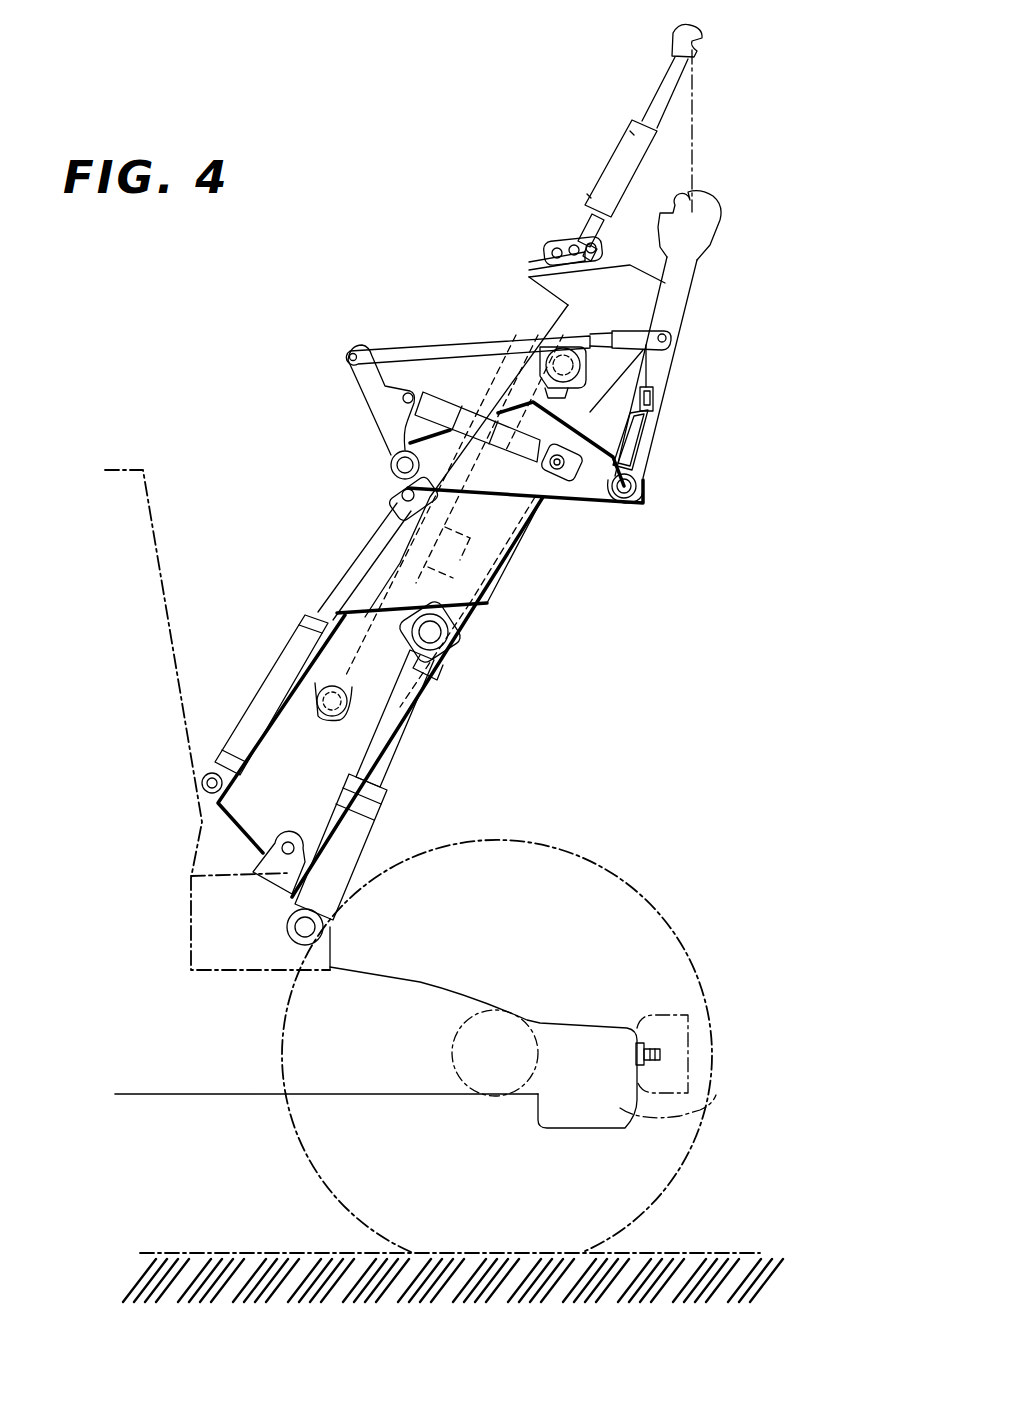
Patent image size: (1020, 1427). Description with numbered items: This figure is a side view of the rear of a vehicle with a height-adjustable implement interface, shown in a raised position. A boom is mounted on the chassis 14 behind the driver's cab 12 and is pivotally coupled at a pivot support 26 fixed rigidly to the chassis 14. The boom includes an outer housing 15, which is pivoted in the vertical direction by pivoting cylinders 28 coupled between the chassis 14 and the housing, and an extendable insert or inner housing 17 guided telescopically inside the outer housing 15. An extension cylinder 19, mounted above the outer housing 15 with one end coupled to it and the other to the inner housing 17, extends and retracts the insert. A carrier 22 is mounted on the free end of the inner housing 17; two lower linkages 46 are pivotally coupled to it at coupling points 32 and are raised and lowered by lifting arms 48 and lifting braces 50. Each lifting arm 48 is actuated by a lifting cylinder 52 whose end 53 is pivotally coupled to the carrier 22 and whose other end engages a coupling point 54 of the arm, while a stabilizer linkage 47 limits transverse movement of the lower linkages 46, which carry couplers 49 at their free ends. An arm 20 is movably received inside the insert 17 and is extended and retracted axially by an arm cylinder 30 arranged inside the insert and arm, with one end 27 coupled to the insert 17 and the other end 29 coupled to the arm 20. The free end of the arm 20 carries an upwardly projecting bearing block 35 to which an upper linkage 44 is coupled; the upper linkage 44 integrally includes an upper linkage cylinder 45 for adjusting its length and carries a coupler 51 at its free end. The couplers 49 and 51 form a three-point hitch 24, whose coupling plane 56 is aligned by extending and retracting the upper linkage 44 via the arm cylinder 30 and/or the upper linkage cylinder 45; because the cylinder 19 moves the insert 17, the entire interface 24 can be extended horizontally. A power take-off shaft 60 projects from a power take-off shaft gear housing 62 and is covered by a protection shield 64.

The driver's cab 12 is at (146, 469).
The chassis 14 is at (177, 1086).
The outer housing 15 is at (255, 807).
The inner housing 17 is at (388, 565).
The extension cylinder 19 is at (237, 747).
The arm 20 is at (633, 313).
The carrier 22 is at (592, 490).
The three-point hitch 24 is at (544, 92).
The pivot support 26 is at (280, 850).
The cylinder end 27 is at (328, 700).
The pivoting cylinder 28 is at (333, 860).
The cylinder end 29 is at (572, 366).
The arm cylinder 30 is at (410, 589).
The coupling point 32 is at (640, 488).
The bearing block 35 is at (553, 283).
The upper linkage 44 is at (656, 100).
The upper linkage cylinder 45 is at (614, 163).
The lower linkage 46 is at (680, 293).
The stabilizer linkage 47 is at (637, 440).
The lifting arm 48 is at (352, 380).
The coupler 49 is at (705, 223).
The lifting brace 50 is at (412, 347).
The coupler 51 is at (671, 43).
The lifting cylinder 52 is at (463, 427).
The cylinder end 53 is at (560, 470).
The coupling point 54 is at (403, 398).
The coupling plane 56 is at (698, 145).
The power take-off shaft 60 is at (662, 1055).
The power take-off shaft gear housing 62 is at (630, 1114).
The power take-off shaft protection shield 64 is at (681, 1011).